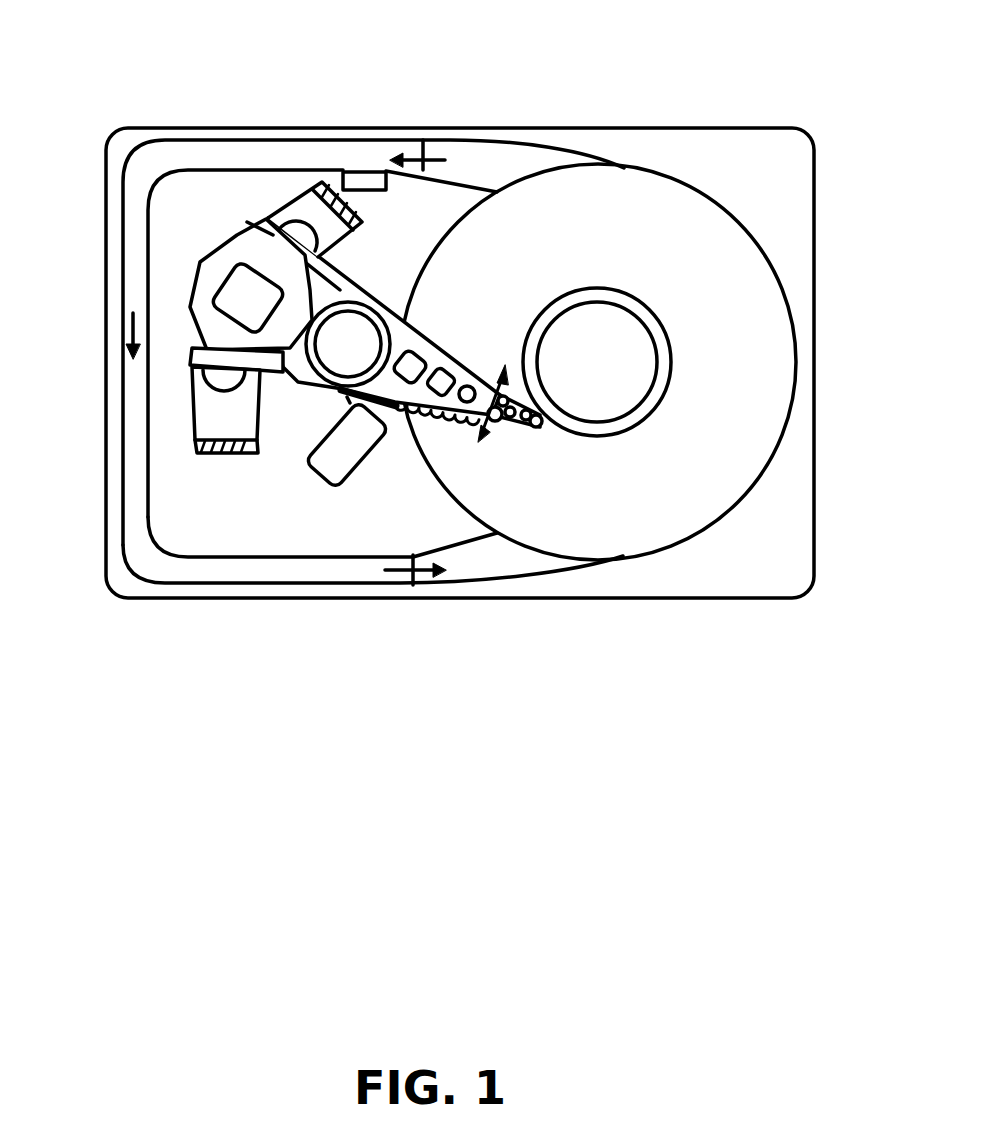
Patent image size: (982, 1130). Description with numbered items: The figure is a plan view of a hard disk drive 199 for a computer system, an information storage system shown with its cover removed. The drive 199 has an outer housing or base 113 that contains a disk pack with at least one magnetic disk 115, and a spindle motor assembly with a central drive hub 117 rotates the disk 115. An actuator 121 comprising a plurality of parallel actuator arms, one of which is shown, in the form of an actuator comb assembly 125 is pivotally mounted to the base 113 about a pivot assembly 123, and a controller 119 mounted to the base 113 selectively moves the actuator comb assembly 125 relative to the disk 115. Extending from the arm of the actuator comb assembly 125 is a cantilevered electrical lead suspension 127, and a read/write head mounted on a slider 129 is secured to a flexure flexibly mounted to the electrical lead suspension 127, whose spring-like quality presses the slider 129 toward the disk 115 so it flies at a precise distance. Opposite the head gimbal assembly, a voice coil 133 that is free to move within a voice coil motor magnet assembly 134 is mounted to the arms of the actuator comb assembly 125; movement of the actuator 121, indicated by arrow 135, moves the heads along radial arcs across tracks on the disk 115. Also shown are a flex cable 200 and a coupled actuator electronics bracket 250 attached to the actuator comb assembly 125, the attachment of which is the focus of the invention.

The hard disk drive 199 is at (455, 28).
The outer housing 113 is at (660, 128).
The magnetic disk 115 is at (677, 203).
The central drive hub 117 is at (624, 294).
The controller 119 is at (377, 191).
The actuator 121 is at (273, 447).
The pivot assembly 123 is at (343, 388).
The actuator comb assembly 125 is at (405, 328).
The electrical lead suspension 127 is at (449, 354).
The slider 129 is at (530, 427).
The voice coil 133 is at (221, 252).
The voice coil motor magnet assembly 134 is at (310, 212).
The arrow 135 is at (490, 432).
The flex cable 200 is at (350, 401).
The actuator electronics bracket 250 is at (329, 487).